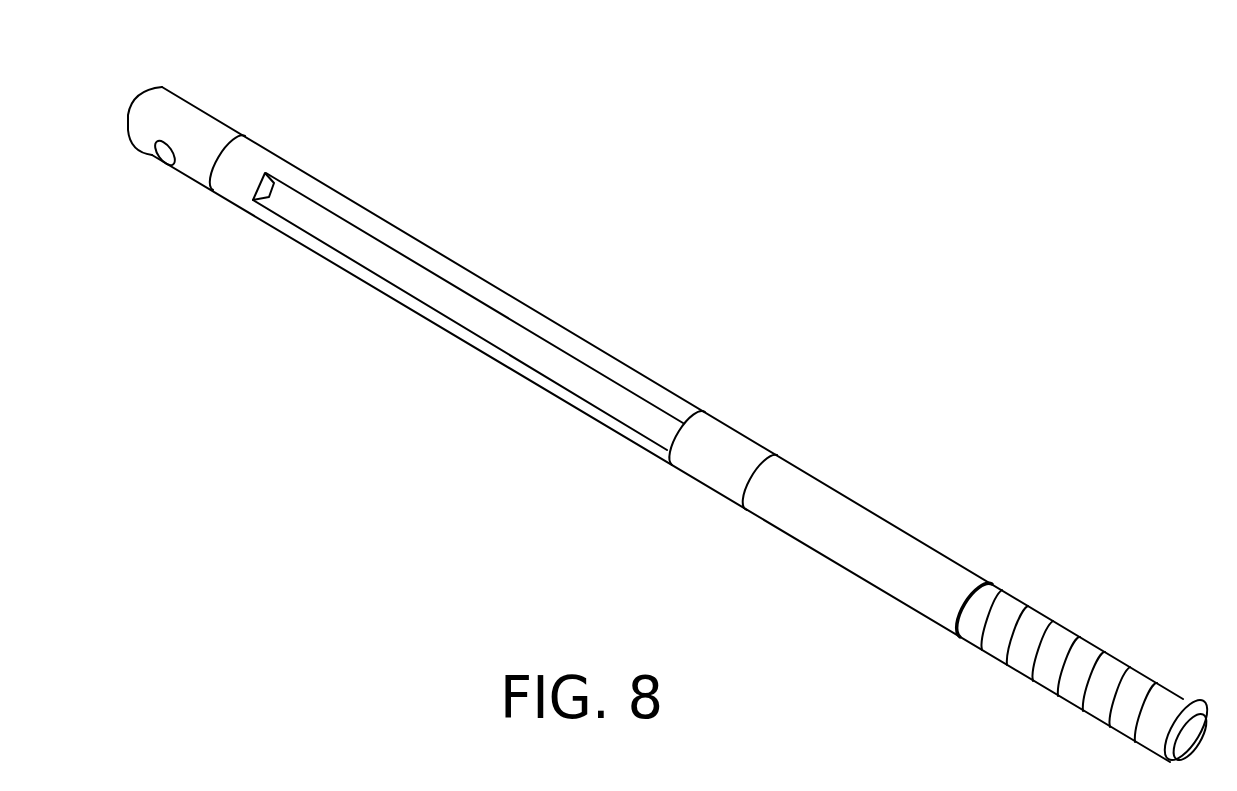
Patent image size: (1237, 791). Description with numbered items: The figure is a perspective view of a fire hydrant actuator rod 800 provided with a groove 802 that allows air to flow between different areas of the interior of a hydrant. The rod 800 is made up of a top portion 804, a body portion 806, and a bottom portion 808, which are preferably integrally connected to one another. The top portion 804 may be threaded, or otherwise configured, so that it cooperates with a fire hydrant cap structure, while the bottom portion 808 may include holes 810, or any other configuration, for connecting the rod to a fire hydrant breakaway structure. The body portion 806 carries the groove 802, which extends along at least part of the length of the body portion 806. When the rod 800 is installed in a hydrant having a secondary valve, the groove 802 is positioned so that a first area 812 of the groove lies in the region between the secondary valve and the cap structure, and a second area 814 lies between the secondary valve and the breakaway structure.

The fire hydrant actuator rod 800 is at (626, 397).
The groove 802 is at (430, 293).
The top portion 804 is at (1005, 608).
The body portion 806 is at (545, 323).
The bottom portion 808 is at (198, 120).
The holes 810 is at (167, 158).
The first area of the groove 812 is at (633, 413).
The second area of the groove 814 is at (287, 208).